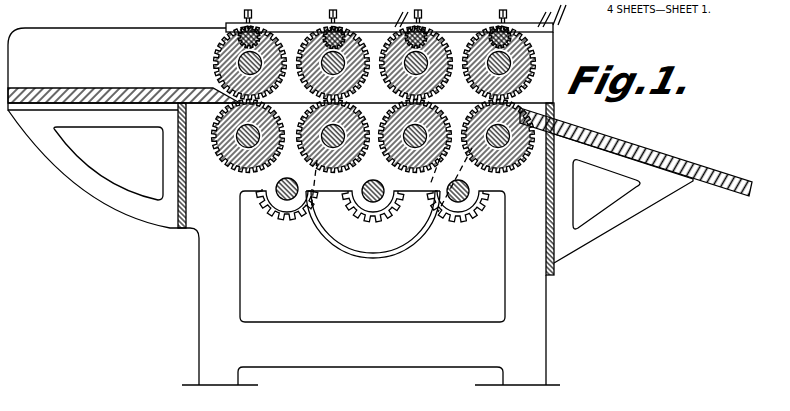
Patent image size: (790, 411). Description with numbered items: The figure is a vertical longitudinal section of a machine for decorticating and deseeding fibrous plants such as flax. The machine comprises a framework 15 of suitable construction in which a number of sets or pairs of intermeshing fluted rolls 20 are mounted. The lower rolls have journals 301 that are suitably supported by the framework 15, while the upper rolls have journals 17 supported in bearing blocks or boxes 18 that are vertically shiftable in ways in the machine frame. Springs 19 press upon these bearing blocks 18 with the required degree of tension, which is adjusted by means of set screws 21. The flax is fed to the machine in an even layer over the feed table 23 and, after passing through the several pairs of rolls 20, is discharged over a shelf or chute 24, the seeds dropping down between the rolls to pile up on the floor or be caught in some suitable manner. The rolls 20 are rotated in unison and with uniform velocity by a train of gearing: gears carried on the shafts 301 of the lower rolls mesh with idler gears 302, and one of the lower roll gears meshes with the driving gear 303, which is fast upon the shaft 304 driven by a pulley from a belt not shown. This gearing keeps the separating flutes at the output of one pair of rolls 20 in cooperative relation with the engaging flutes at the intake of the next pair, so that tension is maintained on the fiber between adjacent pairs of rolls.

The framework 15 is at (546, 326).
The journals 17 is at (224, 70).
The bearing blocks 18 is at (551, 37).
The springs 19 is at (317, 26).
The intermeshing fluted rolls 20 is at (508, 166).
The set screws 21 is at (499, 13).
The feed table 23 is at (117, 92).
The shelf or chute 24 is at (668, 160).
The journals of the lower rolls 301 is at (563, 116).
The idler gears 302 is at (460, 222).
The driving gear 303 is at (386, 218).
The shaft 304 is at (373, 200).